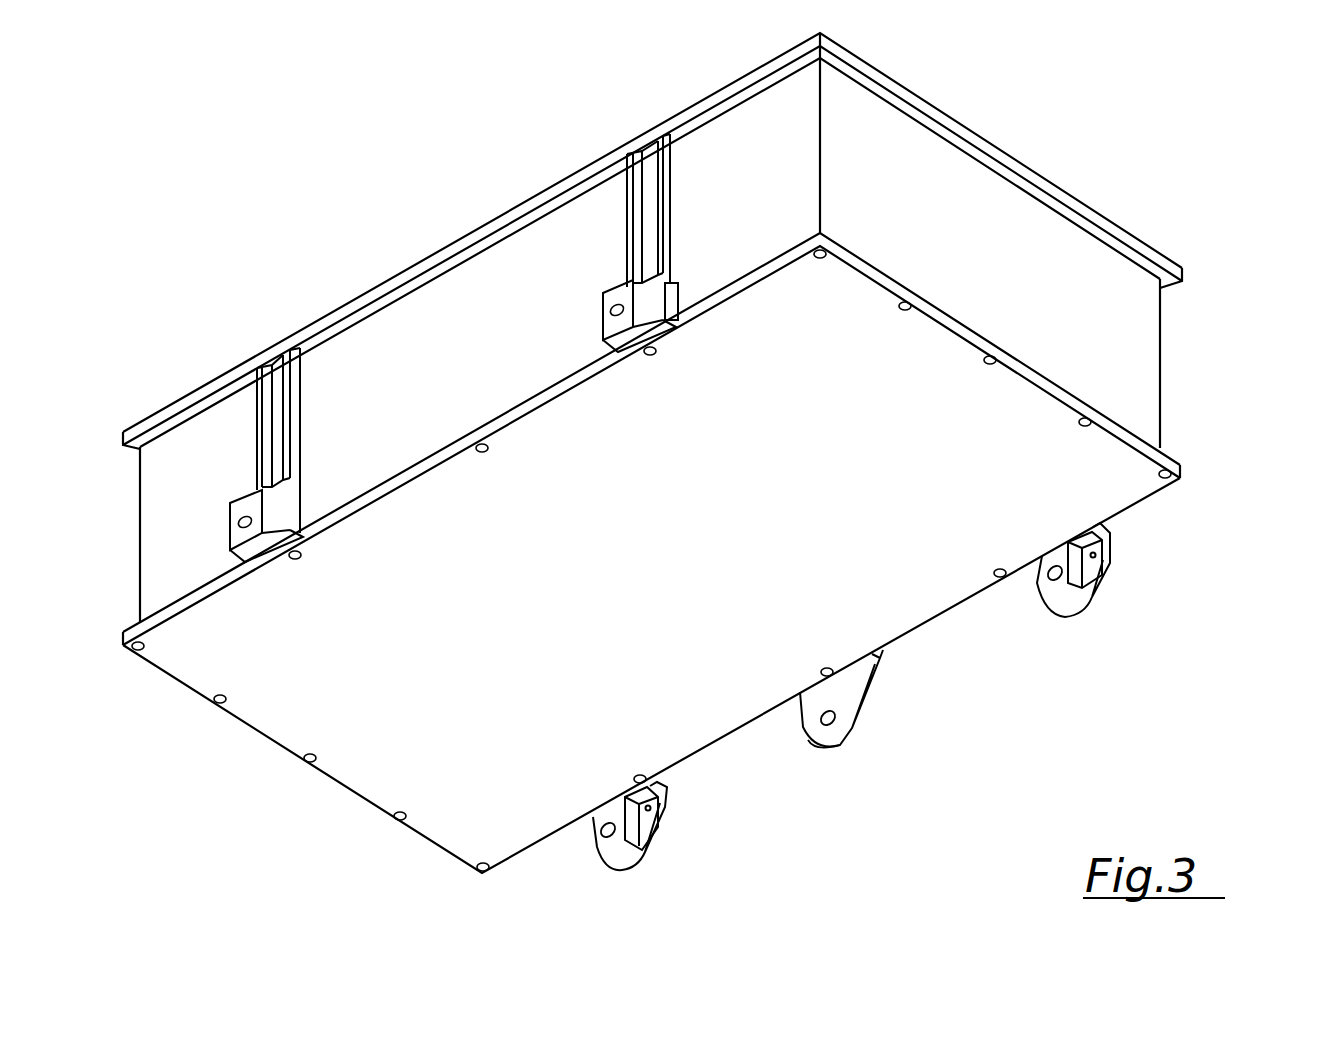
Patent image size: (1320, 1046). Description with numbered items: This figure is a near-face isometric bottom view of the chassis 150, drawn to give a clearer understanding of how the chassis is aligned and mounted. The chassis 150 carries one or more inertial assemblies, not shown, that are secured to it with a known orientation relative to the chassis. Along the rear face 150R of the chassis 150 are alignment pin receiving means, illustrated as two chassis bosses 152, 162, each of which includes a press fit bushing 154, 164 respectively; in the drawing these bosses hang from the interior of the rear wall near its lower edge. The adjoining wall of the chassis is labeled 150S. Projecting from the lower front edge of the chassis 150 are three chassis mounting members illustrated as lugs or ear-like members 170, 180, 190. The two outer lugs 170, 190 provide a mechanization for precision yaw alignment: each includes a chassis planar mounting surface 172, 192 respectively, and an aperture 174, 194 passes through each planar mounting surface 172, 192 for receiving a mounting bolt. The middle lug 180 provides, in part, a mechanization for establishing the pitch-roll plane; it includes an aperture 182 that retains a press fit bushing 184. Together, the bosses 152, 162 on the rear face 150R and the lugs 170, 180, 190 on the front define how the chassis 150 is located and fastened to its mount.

The chassis 150 is at (1168, 368).
The rear face 150R is at (537, 289).
The side wall 150S is at (990, 261).
The chassis boss 152 is at (652, 318).
The press fit bushing 154 is at (648, 352).
The chassis boss 162 is at (273, 517).
The press fit bushing 164 is at (255, 561).
The lug 170 is at (1100, 578).
The chassis planar mounting surface 172 is at (1048, 598).
The aperture 174 is at (1048, 560).
The lug 180 is at (875, 692).
The aperture 182 is at (830, 752).
The press fit bushing 184 is at (822, 742).
The lug 190 is at (640, 866).
The chassis planar mounting surface 192 is at (587, 855).
The aperture 194 is at (610, 813).